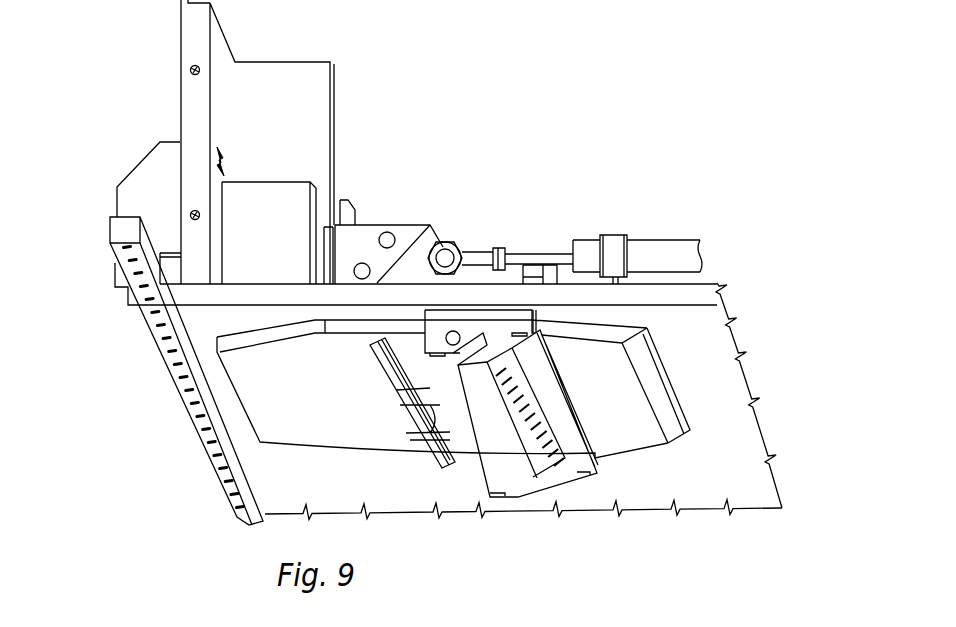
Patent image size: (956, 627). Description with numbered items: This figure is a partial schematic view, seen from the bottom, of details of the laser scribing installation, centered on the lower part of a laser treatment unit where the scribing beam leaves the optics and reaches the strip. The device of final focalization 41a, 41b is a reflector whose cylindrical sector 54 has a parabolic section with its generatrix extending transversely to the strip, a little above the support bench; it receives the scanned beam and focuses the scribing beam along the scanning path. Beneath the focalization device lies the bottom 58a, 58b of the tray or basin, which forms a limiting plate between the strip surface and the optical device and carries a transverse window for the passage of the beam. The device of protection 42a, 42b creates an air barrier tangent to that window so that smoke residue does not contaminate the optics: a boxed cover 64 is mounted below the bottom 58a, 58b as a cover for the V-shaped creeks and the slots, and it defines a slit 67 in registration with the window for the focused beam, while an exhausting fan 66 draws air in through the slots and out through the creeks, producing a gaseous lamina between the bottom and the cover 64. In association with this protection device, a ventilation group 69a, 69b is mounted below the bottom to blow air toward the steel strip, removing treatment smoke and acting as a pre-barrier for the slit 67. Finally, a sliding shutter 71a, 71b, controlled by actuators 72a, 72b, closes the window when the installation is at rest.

The device of final focalization 41a is at (492, 205).
The device of final focalization 41b is at (475, 185).
The device of protection 42a is at (516, 442).
The device of protection 42b is at (448, 472).
The cylindrical sector 54 is at (408, 225).
The bottom 58a is at (523, 421).
The bottom 58b is at (750, 494).
The boxed cover 64 is at (332, 438).
The exhausting fan 66 is at (262, 193).
The slit 67 is at (397, 380).
The ventilation group 69a is at (626, 414).
The ventilation group 69b is at (562, 488).
The sliding shutter 71a is at (538, 239).
The sliding shutter 71b is at (525, 268).
The actuator 72a is at (640, 229).
The actuator 72b is at (655, 248).